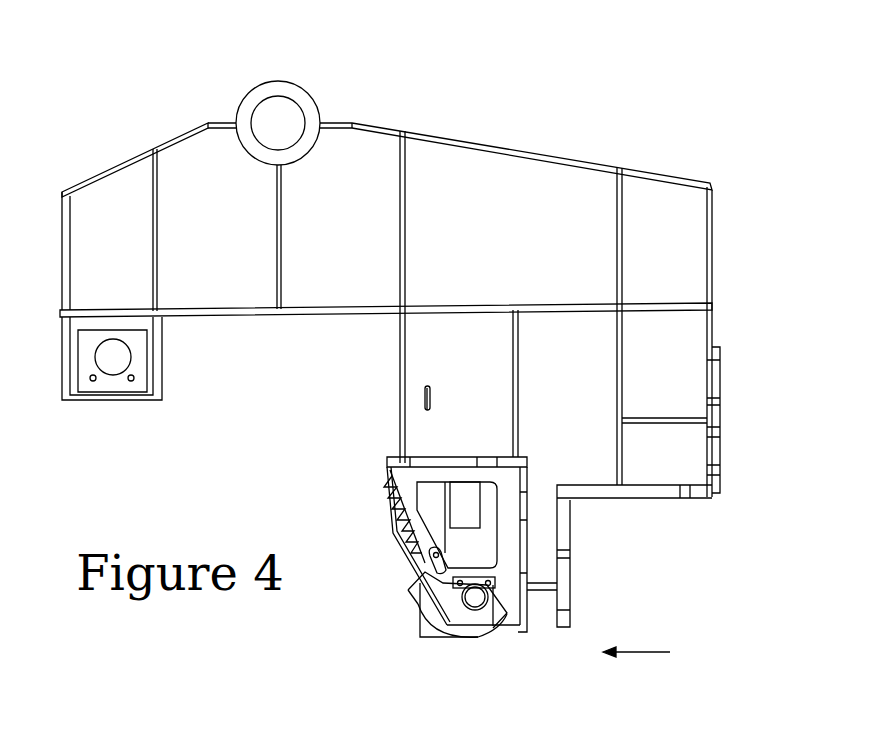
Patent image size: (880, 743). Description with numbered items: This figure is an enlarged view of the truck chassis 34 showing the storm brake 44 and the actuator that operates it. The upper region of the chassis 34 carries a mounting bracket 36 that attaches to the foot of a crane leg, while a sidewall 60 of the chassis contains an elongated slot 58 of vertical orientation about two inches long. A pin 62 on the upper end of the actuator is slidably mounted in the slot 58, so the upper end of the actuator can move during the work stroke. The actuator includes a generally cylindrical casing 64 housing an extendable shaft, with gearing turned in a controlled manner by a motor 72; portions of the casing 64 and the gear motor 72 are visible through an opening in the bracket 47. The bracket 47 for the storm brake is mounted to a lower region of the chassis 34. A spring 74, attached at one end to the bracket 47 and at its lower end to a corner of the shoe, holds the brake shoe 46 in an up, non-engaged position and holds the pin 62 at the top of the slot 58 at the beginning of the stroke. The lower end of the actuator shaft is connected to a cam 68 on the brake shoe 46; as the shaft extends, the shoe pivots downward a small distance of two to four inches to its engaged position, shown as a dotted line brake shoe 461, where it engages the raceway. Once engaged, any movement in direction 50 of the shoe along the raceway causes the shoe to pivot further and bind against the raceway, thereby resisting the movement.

The chassis 34 is at (520, 241).
The mounting bracket 36 is at (322, 99).
The storm brake 44 is at (378, 528).
The brake shoe 46 is at (410, 598).
The dotted line brake shoe 461 is at (442, 640).
The bracket 47 is at (507, 543).
The direction 50 is at (652, 655).
The elongated slot 58 is at (433, 397).
The sidewall 60 is at (447, 364).
The pin 62 is at (424, 407).
The casing 64 is at (445, 543).
The cam 68 is at (430, 557).
The motor 72 is at (465, 480).
The spring 74 is at (390, 490).